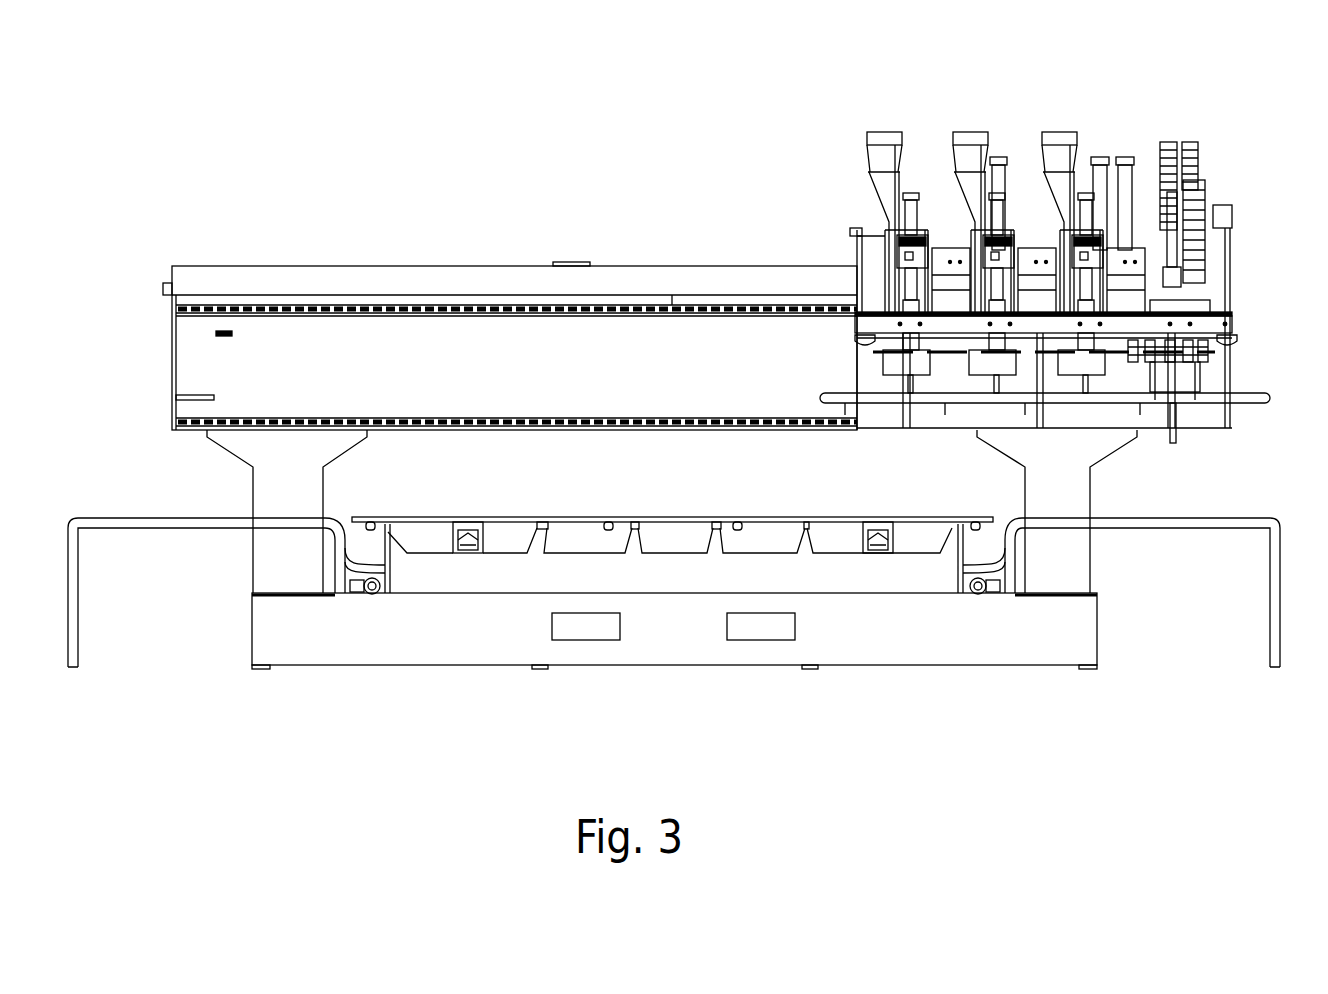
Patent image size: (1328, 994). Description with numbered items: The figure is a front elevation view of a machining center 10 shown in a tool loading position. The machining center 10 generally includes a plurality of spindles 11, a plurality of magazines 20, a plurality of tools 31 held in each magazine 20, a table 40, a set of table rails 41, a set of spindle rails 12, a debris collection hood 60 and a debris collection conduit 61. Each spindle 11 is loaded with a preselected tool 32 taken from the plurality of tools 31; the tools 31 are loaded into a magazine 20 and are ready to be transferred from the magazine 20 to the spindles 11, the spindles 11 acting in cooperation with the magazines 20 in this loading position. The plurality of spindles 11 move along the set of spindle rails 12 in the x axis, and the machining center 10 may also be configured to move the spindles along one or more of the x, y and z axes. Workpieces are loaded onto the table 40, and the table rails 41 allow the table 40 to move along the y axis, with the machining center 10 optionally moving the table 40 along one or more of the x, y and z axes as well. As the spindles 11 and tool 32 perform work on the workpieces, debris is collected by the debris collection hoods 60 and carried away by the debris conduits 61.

The machining center 10 is at (1126, 110).
The spindle 11 is at (1182, 363).
The spindle rails 12 is at (177, 307).
The magazine 20 is at (1213, 350).
The tools 31 is at (1193, 387).
The preselected tool 32 is at (1178, 438).
The table 40 is at (412, 525).
The table rails 41 is at (477, 553).
The debris collection hood 60 is at (893, 362).
The debris collection conduit 61 is at (870, 155).